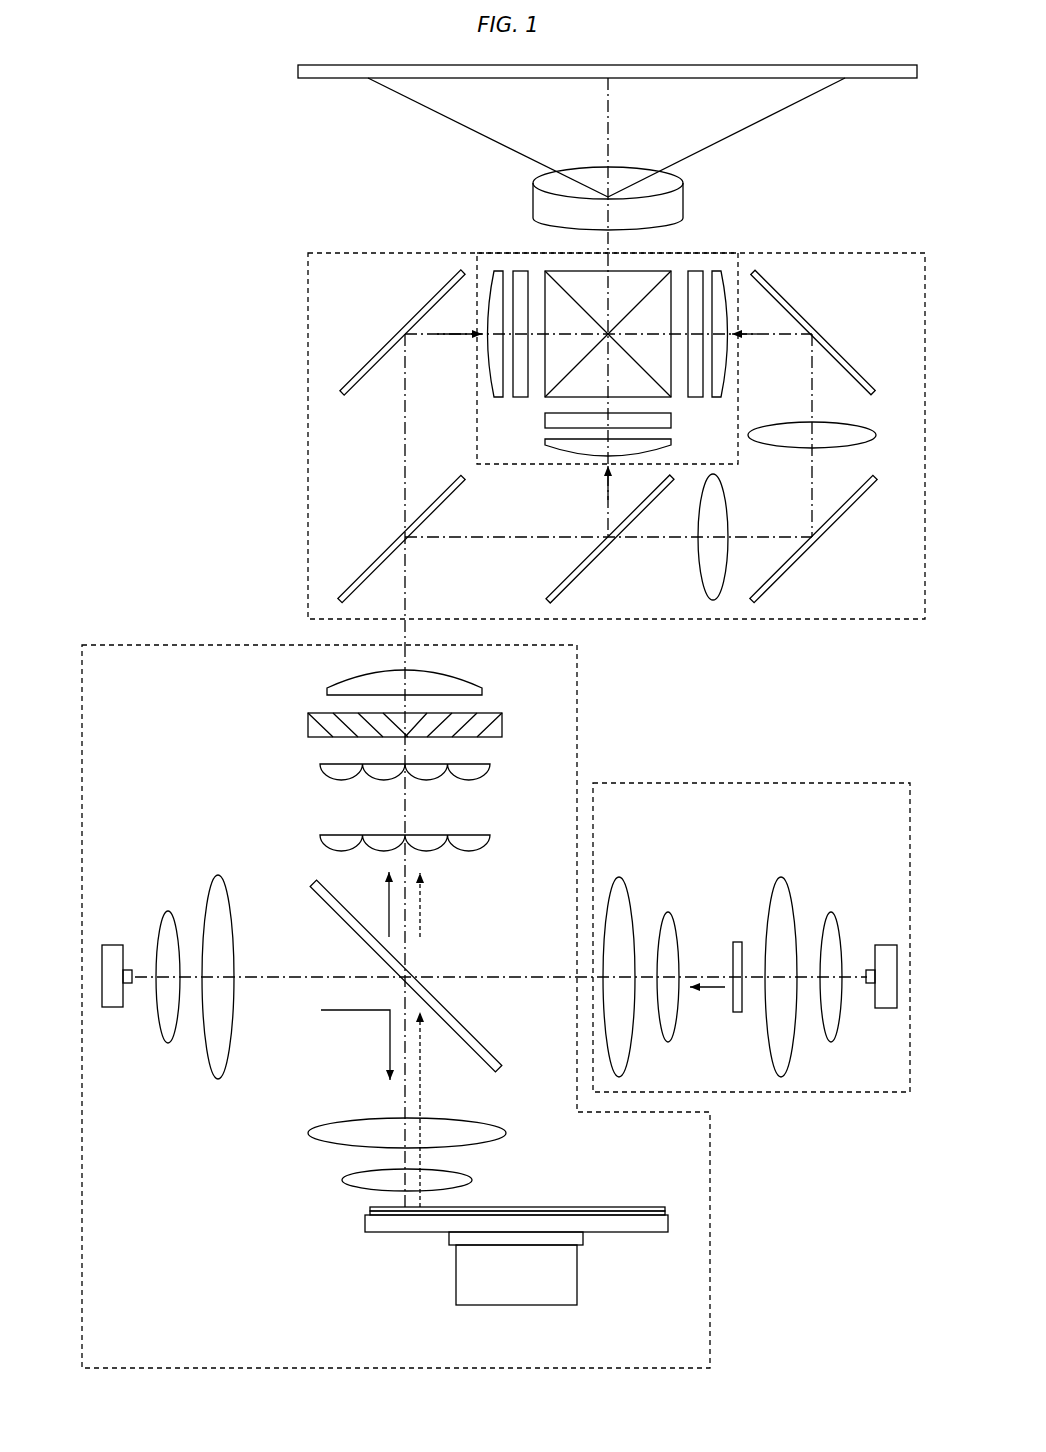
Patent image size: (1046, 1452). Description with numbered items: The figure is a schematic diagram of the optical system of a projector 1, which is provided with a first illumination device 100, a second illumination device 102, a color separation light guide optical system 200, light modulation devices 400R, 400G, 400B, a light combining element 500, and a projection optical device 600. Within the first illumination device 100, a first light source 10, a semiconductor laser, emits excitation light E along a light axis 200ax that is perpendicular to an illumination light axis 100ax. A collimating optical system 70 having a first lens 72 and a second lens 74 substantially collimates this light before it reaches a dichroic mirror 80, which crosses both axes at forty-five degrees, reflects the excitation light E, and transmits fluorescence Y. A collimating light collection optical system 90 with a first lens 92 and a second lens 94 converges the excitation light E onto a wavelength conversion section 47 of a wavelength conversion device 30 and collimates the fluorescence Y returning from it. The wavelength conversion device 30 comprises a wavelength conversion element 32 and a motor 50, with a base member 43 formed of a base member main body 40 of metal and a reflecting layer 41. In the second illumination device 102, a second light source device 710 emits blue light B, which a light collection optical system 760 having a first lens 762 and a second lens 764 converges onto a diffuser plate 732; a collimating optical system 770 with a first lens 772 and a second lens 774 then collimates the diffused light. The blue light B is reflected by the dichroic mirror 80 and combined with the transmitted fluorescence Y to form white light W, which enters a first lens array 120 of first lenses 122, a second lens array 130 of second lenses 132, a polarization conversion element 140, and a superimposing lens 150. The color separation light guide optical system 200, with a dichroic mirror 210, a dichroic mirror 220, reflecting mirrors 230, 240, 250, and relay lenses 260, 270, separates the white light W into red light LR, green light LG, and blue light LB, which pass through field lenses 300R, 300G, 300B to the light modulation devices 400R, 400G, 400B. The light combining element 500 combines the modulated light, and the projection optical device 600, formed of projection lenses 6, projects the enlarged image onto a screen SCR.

The projector 1 is at (262, 167).
The projection lens 6 is at (590, 182).
The screen SCR is at (888, 80).
The projection optical device 600 is at (533, 198).
The color separation light guide optical system 200 is at (863, 621).
The light combining element 500 is at (665, 270).
The field lens 300R is at (497, 270).
The field lens 300G is at (545, 443).
The field lens 300B is at (725, 270).
The light modulation device 400R is at (520, 271).
The light modulation device 400G is at (545, 421).
The light modulation device 400B is at (695, 271).
The red light LR is at (453, 336).
The green light LG is at (605, 490).
The blue light LB is at (760, 336).
The dichroic mirror 210 is at (368, 567).
The dichroic mirror 220 is at (595, 577).
The reflecting mirror 230 is at (360, 378).
The reflecting mirror 240 is at (833, 525).
The reflecting mirror 250 is at (858, 378).
The relay lens 260 is at (700, 560).
The relay lens 270 is at (850, 434).
The first illumination device 100 is at (712, 1285).
The illumination light axis 100ax is at (405, 632).
The light axis 200ax is at (283, 980).
The first light source 10 is at (134, 938).
The collimating optical system 70 is at (232, 812).
The first lens 72 is at (168, 911).
The second lens 74 is at (218, 875).
The dichroic mirror 80 is at (497, 1045).
The collimating light collection optical system 90 is at (243, 1148).
The first lens 92 is at (350, 1187).
The second lens 94 is at (307, 1140).
The wavelength conversion device 30 is at (428, 1260).
The wavelength conversion element 32 is at (595, 1198).
The base member main body 40 is at (668, 1225).
The reflecting layer 41 is at (668, 1213).
The base member 43 is at (767, 1197).
The wavelength conversion section 47 is at (665, 1208).
The motor 50 is at (565, 1282).
The first lens array 120 is at (490, 838).
The first lens 122 is at (340, 848).
The second lens array 130 is at (490, 766).
The second lens 132 is at (340, 777).
The polarization conversion element 140 is at (503, 720).
The superimposing lens 150 is at (482, 690).
The second illumination device 102 is at (863, 1092).
The second light source device 710 is at (860, 948).
The diffuser plate 732 is at (738, 942).
The light collection optical system 760 is at (777, 838).
The first lens 762 is at (838, 912).
The second lens 764 is at (789, 880).
The collimating optical system 770 is at (615, 838).
The first lens 772 is at (672, 912).
The second lens 774 is at (626, 880).
The blue light B is at (389, 897).
The fluorescence Y is at (420, 930).
The excitation light E is at (355, 1045).
The white light W is at (472, 873).